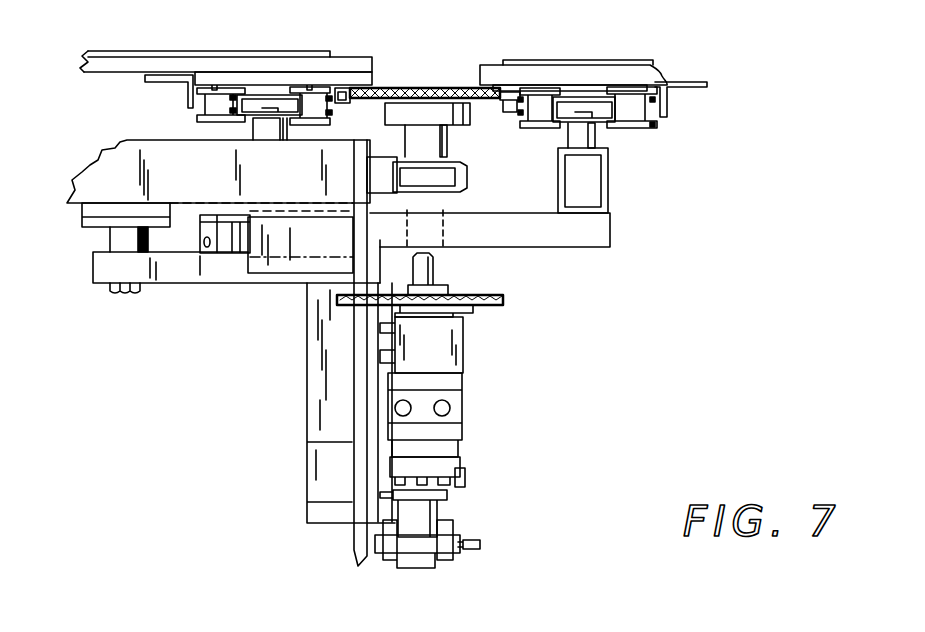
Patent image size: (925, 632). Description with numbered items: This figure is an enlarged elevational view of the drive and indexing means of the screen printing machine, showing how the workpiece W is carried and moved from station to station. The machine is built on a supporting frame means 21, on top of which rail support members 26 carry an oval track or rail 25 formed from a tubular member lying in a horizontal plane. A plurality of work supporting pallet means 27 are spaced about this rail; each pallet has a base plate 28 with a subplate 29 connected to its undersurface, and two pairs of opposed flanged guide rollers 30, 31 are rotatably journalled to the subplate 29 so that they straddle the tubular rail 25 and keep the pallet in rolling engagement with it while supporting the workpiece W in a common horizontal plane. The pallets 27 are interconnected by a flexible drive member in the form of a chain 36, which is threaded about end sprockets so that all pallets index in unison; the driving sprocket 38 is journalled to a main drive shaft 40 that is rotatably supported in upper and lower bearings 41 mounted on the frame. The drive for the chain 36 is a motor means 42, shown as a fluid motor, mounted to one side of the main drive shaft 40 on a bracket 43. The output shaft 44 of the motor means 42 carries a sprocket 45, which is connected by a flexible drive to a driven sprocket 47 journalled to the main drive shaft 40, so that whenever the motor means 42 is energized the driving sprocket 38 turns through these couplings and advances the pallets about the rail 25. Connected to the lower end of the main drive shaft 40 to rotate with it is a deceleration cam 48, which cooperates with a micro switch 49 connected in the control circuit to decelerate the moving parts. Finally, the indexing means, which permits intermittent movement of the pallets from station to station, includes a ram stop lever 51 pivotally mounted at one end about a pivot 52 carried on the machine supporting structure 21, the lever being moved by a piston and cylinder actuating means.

The supporting frame means 21 is at (115, 150).
The oval track or rail 25 is at (265, 98).
The rail support members 26 is at (608, 176).
The work supporting pallet means 27 is at (127, 50).
The base plate 28 is at (188, 68).
The subplate 29 is at (237, 78).
The guide rollers 30 is at (220, 124).
The guide rollers 31 is at (314, 126).
The flexible drive member (chain) 36 is at (340, 103).
The driving sprocket 38 is at (423, 88).
The main drive shaft 40 is at (437, 508).
The bearings 41 is at (467, 172).
The motor means 42 is at (465, 352).
The bracket 43 is at (368, 337).
The output shaft 44 is at (468, 306).
The sprocket 45 is at (448, 290).
The driven sprocket 47 is at (505, 297).
The deceleration cam 48 is at (455, 552).
The micro switch 49 is at (483, 545).
The ram stop lever 51 is at (182, 280).
The pivot 52 is at (133, 292).
The workpiece W is at (326, 55).